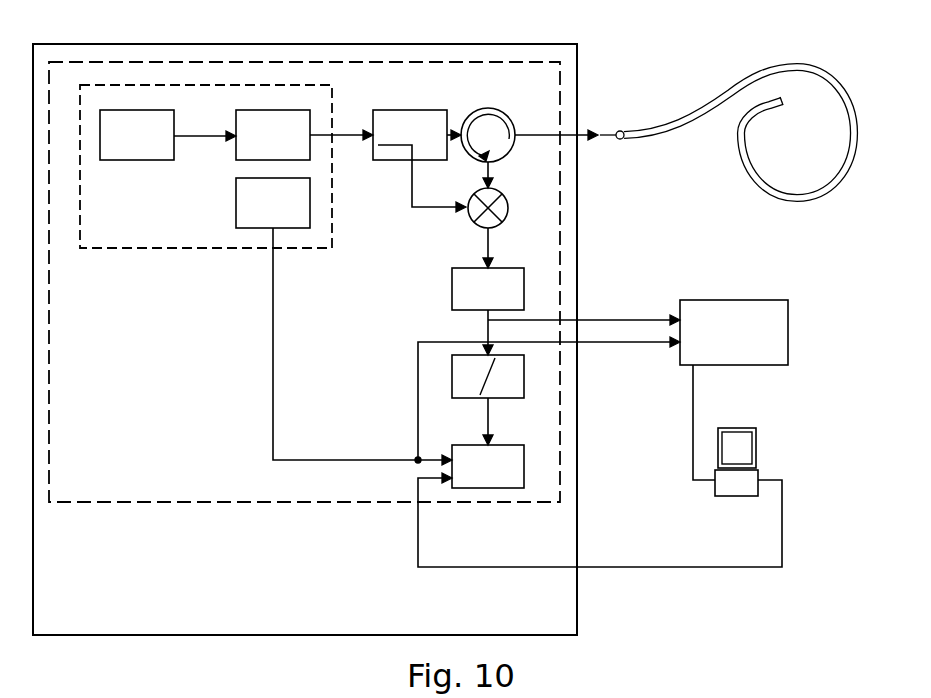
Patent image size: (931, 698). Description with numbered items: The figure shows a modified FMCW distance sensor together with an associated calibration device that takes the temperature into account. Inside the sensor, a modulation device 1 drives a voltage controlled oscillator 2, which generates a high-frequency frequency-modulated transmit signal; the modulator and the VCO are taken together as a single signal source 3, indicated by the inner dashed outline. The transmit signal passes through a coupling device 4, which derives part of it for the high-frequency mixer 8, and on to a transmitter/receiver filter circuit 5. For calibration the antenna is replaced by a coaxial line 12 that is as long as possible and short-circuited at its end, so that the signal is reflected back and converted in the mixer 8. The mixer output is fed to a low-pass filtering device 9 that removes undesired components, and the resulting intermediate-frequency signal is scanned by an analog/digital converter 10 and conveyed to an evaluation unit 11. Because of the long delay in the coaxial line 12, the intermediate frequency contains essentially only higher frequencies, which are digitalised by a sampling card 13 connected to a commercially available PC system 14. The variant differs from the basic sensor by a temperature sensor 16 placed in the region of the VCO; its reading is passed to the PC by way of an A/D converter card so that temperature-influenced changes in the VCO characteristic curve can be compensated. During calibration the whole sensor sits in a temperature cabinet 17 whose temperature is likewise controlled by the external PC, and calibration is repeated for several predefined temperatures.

The modulation device 1 is at (139, 160).
The voltage controlled oscillator 2 is at (290, 110).
The signal source 3 is at (160, 248).
The coupling device 4 is at (408, 110).
The transmitter/receiver filter circuit 5 is at (496, 110).
The high-frequency mixer 8 is at (508, 212).
The low-pass filtering device 9 is at (452, 285).
The analog/digital converter 10 is at (524, 388).
The evaluation unit 11 is at (500, 488).
The coaxial line 12 is at (838, 100).
The sampling card 13 is at (738, 300).
The PC system 14 is at (735, 496).
The temperature sensor 16 is at (236, 200).
The temperature cabinet 17 is at (577, 72).